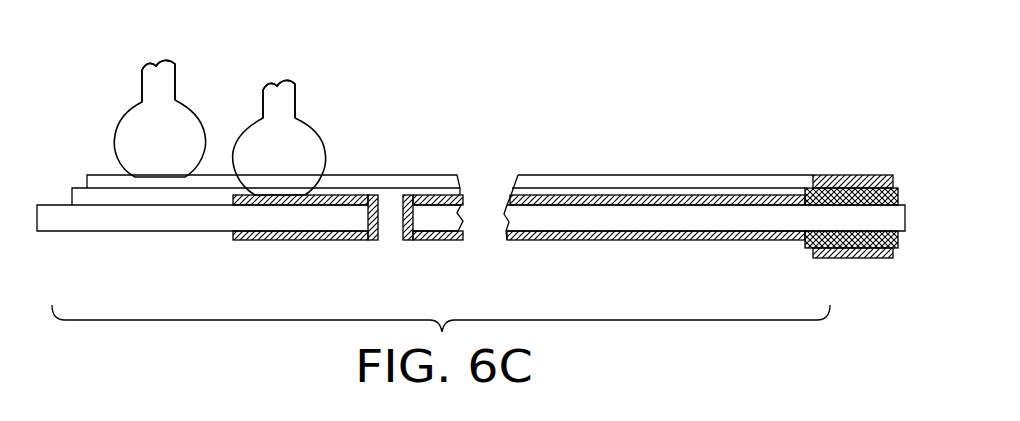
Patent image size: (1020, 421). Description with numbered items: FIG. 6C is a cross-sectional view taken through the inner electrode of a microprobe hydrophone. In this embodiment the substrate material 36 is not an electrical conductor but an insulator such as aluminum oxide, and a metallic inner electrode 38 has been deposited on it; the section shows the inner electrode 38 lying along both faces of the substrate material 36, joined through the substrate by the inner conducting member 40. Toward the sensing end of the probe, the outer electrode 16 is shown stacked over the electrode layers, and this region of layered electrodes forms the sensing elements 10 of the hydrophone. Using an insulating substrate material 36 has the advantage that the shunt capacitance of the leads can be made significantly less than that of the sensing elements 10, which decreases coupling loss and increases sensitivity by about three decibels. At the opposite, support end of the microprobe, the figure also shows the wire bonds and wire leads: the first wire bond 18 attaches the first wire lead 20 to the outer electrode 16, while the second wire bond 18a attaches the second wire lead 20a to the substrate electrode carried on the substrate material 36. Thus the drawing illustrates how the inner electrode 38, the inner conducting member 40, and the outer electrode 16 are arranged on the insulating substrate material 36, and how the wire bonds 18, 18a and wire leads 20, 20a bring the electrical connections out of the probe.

The sensing element 10 is at (855, 176).
The outer electrode 16 is at (822, 175).
The first wire bond 18 is at (128, 116).
The second wire bond 18a is at (317, 143).
The first wire lead 20 is at (142, 90).
The second wire lead 20a is at (263, 106).
The substrate material 36 is at (100, 222).
The inner electrode 38 is at (363, 196).
The inner conducting member 40 is at (392, 233).